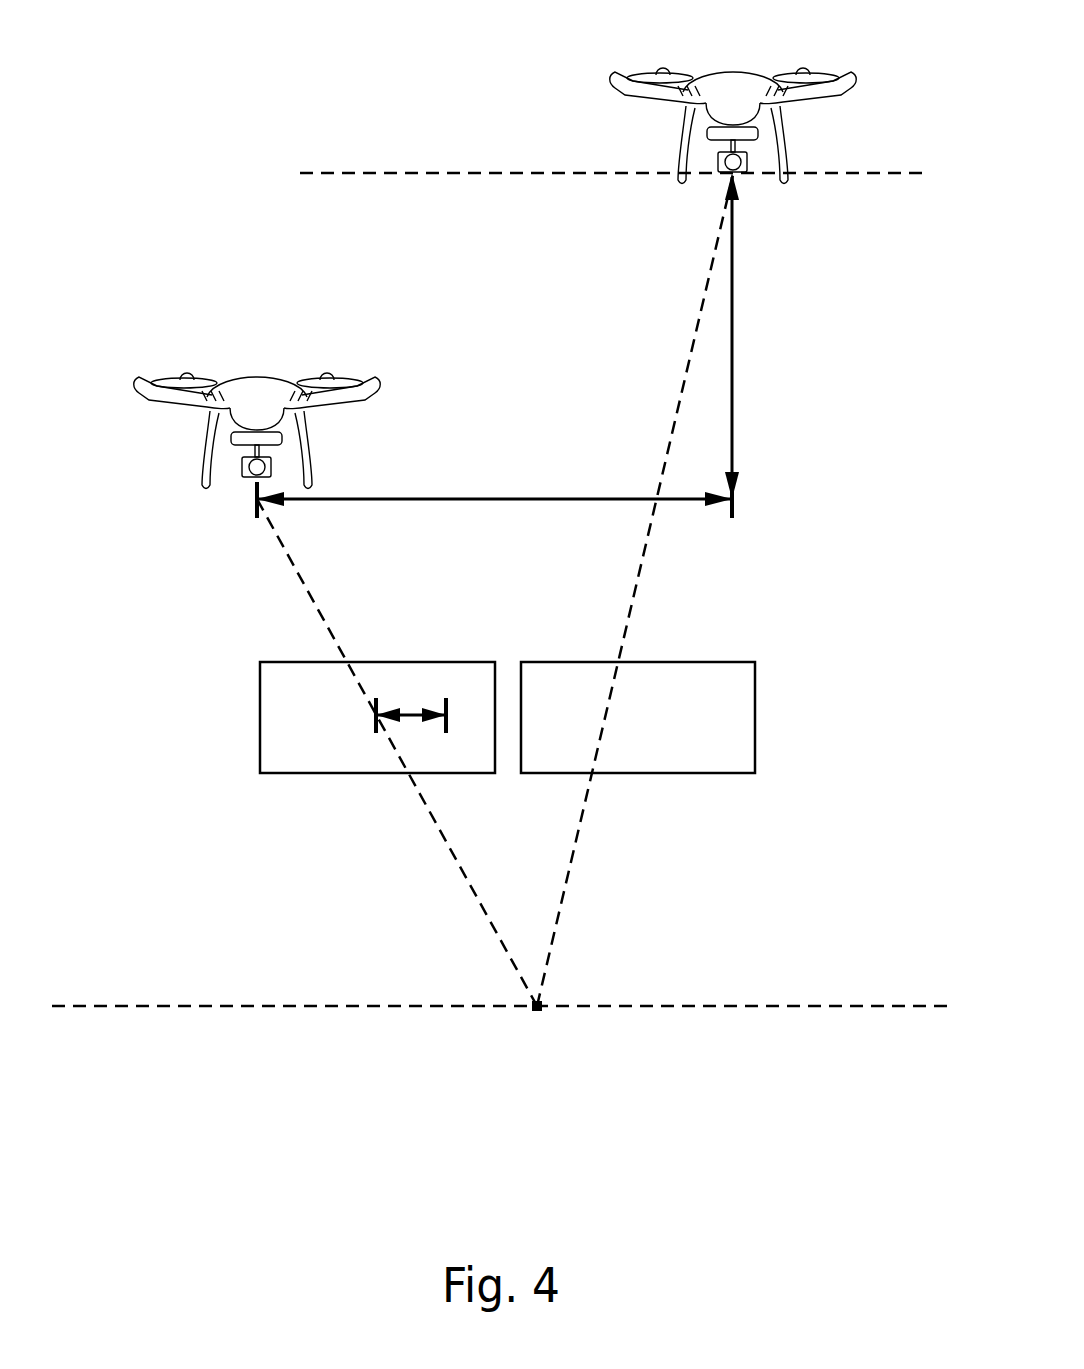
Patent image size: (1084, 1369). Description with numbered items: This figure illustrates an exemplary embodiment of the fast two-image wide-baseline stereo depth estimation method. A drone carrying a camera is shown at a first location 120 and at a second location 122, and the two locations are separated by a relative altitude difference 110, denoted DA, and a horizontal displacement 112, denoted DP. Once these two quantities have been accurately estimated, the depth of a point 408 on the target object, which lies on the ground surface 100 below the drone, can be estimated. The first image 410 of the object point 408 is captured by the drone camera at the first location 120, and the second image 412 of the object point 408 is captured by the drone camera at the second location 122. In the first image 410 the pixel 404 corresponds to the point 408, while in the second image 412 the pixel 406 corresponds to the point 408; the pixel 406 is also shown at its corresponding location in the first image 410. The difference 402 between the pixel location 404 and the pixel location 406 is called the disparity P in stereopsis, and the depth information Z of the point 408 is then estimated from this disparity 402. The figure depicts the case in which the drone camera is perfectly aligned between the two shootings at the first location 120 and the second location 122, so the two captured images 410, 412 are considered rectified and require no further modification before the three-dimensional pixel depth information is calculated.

The ground surface 100 is at (192, 1005).
The relative altitude difference 110 is at (737, 342).
The horizontal displacement 112 is at (522, 503).
The first location 120 is at (167, 367).
The second location 122 is at (598, 100).
The disparity 402 is at (408, 692).
The pixel of the first image 404 is at (372, 716).
The pixel of the second image 406 is at (448, 717).
The object point 408 is at (545, 1005).
The first image 410 is at (268, 688).
The second image 412 is at (740, 672).